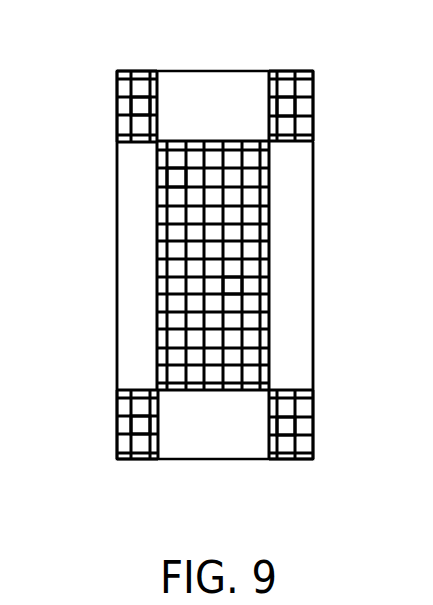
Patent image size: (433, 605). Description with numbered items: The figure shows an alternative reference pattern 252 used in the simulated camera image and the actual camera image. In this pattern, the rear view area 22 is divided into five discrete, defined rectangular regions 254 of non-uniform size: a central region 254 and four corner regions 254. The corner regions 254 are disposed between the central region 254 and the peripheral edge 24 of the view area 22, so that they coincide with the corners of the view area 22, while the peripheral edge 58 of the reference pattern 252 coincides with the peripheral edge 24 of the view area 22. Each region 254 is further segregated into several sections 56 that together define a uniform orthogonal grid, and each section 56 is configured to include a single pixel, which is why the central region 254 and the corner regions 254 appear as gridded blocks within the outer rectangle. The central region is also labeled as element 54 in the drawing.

The reference pattern 252 is at (182, 49).
The view area 22 is at (302, 195).
The peripheral edge 24 is at (116, 333).
The peripheral edge 58 is at (313, 337).
The rectangular regions 254 is at (117, 85).
The central cell region 54 is at (248, 252).
The sections 56 is at (138, 130).